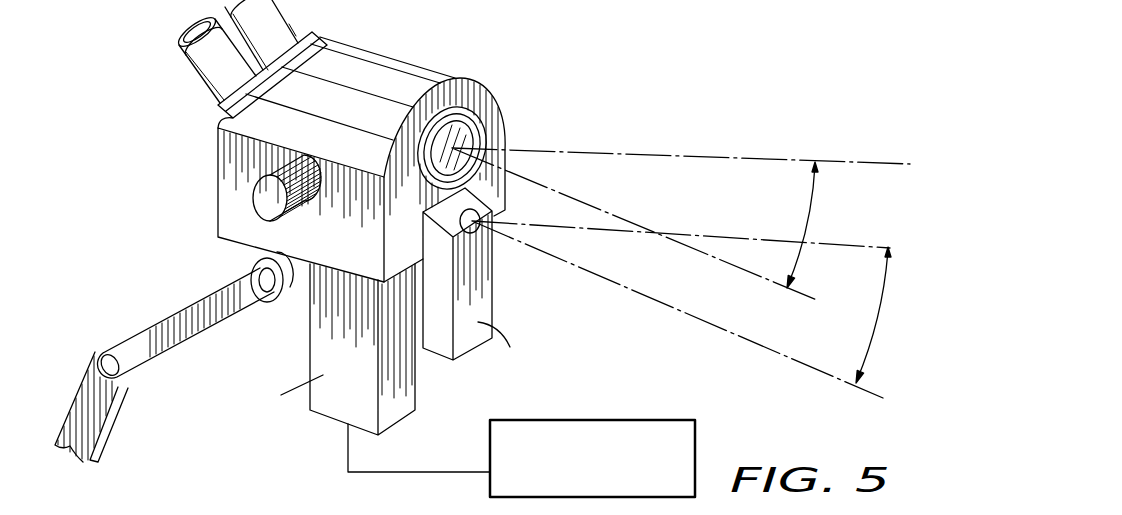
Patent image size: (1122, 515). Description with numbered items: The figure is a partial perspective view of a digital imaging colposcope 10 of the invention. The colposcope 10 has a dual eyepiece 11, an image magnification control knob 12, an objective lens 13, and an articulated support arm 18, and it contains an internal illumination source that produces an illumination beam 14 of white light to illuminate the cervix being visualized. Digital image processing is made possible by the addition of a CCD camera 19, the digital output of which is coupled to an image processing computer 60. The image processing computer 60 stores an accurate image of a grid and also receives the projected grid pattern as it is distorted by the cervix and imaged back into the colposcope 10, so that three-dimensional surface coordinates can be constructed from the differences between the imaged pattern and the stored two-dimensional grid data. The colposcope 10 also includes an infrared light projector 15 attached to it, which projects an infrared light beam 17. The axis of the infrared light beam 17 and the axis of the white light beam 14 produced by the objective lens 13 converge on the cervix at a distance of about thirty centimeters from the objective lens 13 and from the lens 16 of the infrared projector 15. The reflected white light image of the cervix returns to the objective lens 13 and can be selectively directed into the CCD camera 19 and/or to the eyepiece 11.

The digital imaging colposcope 10 is at (214, 215).
The dual eyepiece 11 is at (276, 27).
The image magnification control knob 12 is at (273, 201).
The objective lens 13 is at (481, 118).
The illumination beam 14 is at (641, 184).
The infrared light projector 15 is at (478, 290).
The lens 16 is at (478, 232).
The infrared light beam 17 is at (623, 230).
The articulated support arm 18 is at (163, 327).
The CCD camera 19 is at (311, 400).
The image processing computer 60 is at (648, 420).